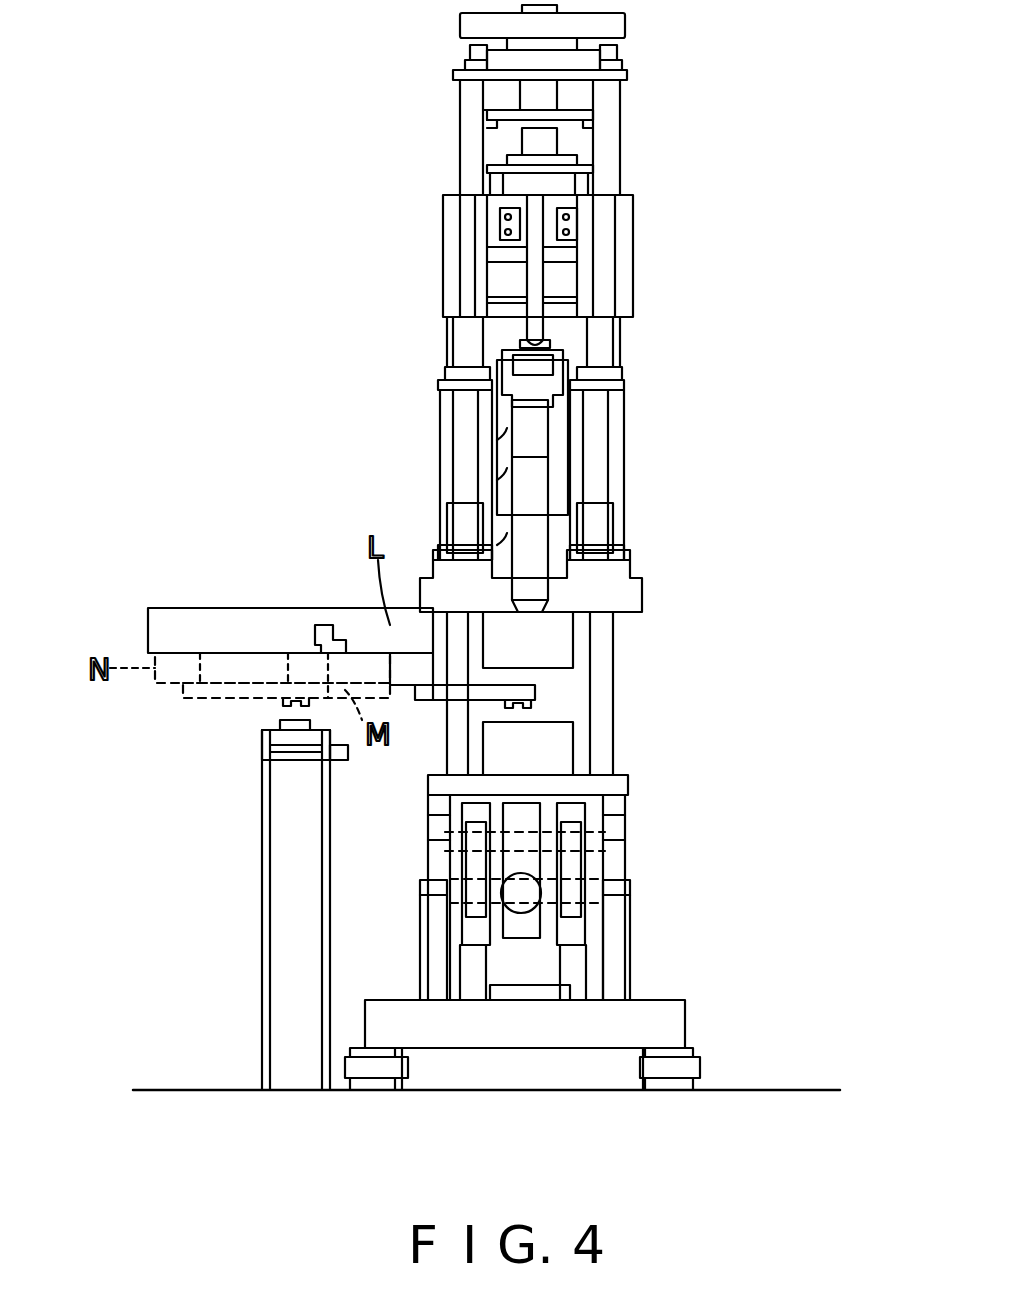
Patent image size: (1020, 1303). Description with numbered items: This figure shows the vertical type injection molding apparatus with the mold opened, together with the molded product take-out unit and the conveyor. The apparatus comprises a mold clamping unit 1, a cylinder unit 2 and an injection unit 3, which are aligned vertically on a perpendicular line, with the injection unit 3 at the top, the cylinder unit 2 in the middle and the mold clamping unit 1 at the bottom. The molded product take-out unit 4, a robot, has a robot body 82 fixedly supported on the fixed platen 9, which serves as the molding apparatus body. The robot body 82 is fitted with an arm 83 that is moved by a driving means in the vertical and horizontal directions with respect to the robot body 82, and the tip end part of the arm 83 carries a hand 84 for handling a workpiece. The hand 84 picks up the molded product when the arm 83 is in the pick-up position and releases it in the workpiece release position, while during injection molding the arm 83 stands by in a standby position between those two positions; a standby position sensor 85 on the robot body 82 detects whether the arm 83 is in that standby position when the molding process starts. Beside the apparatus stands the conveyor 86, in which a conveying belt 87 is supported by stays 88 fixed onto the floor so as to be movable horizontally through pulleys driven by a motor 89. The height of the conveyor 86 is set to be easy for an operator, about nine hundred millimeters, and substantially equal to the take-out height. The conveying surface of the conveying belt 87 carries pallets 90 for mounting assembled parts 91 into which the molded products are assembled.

The mold clamping unit 1 is at (636, 829).
The cylinder unit 2 is at (558, 458).
The injection unit 3 is at (645, 276).
The molded product take-out unit 4 is at (398, 595).
The fixed platen 9 is at (625, 598).
The robot body 82 is at (367, 625).
The arm 83 is at (535, 690).
The hand 84 is at (535, 705).
The standby position sensor 85 is at (328, 625).
The conveyor 86 is at (252, 900).
The conveying belt 87 is at (262, 750).
The stays 88 is at (322, 924).
The motor 89 is at (338, 762).
The pallets 90 is at (285, 745).
The assembled parts 91 is at (280, 722).